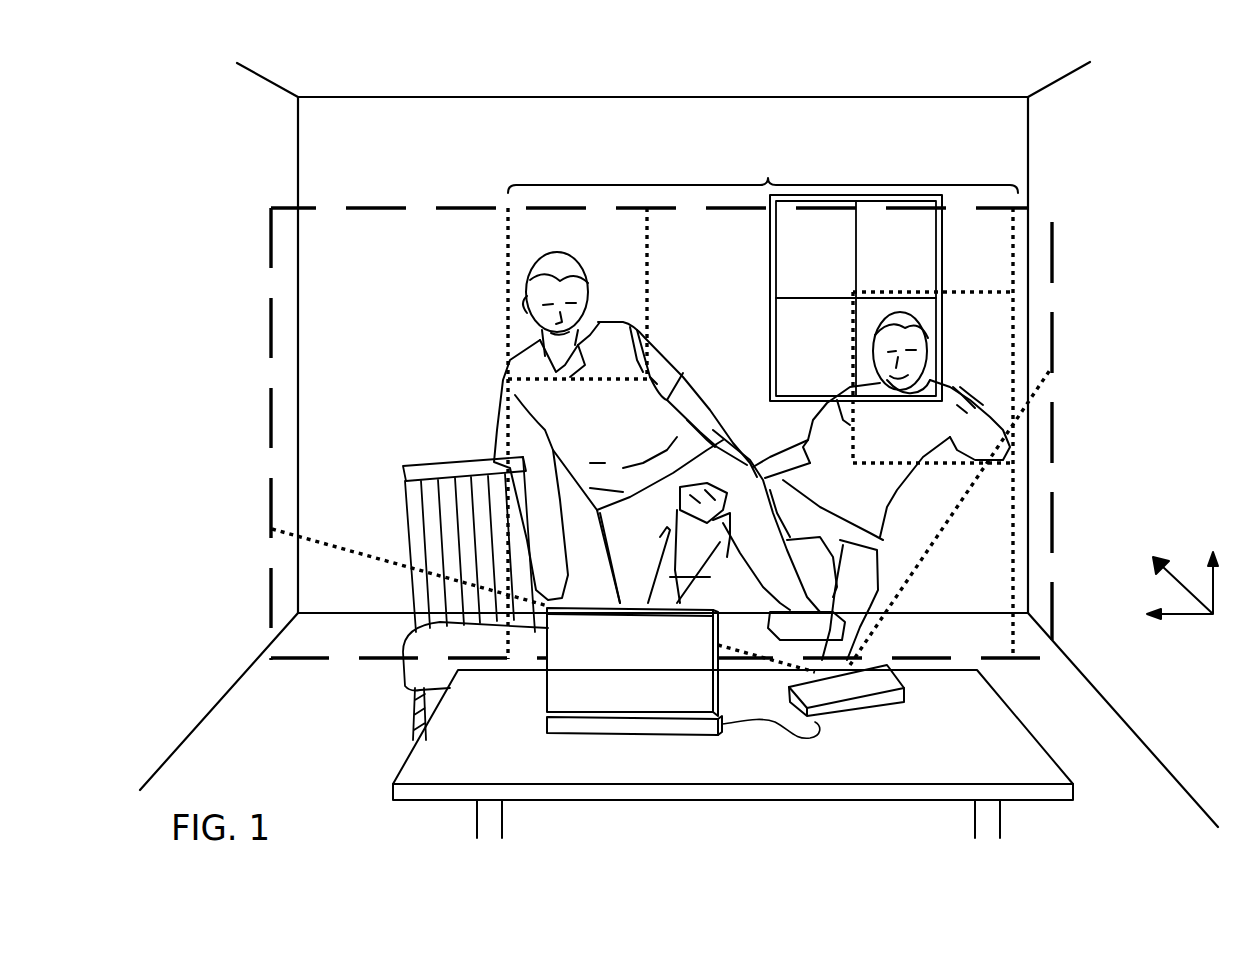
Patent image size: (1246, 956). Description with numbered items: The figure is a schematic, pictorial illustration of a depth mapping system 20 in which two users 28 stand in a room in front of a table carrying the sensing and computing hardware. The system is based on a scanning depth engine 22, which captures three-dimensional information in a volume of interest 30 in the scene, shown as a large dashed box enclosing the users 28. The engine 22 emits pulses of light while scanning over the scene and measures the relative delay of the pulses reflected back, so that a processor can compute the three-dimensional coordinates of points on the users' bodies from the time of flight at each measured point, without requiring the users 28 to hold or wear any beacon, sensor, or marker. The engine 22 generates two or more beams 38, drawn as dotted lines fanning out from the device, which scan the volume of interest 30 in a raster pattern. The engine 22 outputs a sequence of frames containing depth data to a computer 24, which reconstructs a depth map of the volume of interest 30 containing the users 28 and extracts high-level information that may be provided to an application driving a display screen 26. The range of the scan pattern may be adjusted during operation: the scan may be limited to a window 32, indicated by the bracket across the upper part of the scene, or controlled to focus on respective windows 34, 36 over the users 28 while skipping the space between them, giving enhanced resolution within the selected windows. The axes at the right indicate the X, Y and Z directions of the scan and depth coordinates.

The depth mapping system 20 is at (226, 281).
The scanning depth engine 22 is at (904, 679).
The computer 24 is at (547, 725).
The display screen 26 is at (547, 681).
The users 28 is at (607, 322).
The volume of interest 30 is at (271, 411).
The window 32 is at (763, 172).
The window 34 is at (508, 245).
The window 36 is at (980, 292).
The beams 38 is at (352, 548).